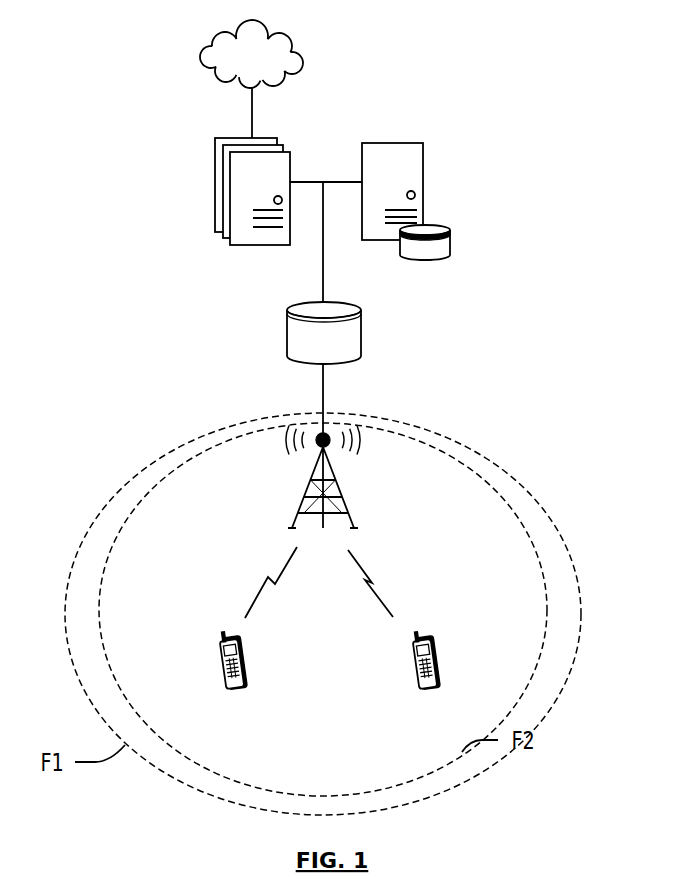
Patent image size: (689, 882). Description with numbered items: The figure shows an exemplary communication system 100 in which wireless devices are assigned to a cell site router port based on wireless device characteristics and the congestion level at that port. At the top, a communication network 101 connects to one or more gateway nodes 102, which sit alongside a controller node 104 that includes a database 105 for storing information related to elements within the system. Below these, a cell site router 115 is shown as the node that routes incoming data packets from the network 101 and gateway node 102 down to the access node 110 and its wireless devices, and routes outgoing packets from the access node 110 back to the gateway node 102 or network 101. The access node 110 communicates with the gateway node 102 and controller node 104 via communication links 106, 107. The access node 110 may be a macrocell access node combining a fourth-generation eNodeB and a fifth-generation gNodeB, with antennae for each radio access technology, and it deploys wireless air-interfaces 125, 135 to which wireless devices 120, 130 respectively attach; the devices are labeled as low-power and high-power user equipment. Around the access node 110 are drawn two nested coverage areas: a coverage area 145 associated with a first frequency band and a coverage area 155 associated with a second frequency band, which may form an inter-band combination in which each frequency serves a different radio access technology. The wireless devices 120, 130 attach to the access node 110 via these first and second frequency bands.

The communication system 100 is at (442, 35).
The communication network 101 is at (251, 79).
The gateway node 102 is at (217, 138).
The controller node 104 is at (423, 143).
The database 105 is at (447, 226).
The communication link 106 is at (323, 403).
The communication link 107 is at (322, 285).
The access node 110 is at (308, 488).
The cell site router 115 is at (362, 330).
The wireless device 120 is at (218, 675).
The wireless air-interface 125 is at (265, 582).
The wireless device 130 is at (411, 677).
The wireless air-interface 135 is at (378, 580).
The coverage area 145 is at (193, 793).
The coverage area 155 is at (280, 797).